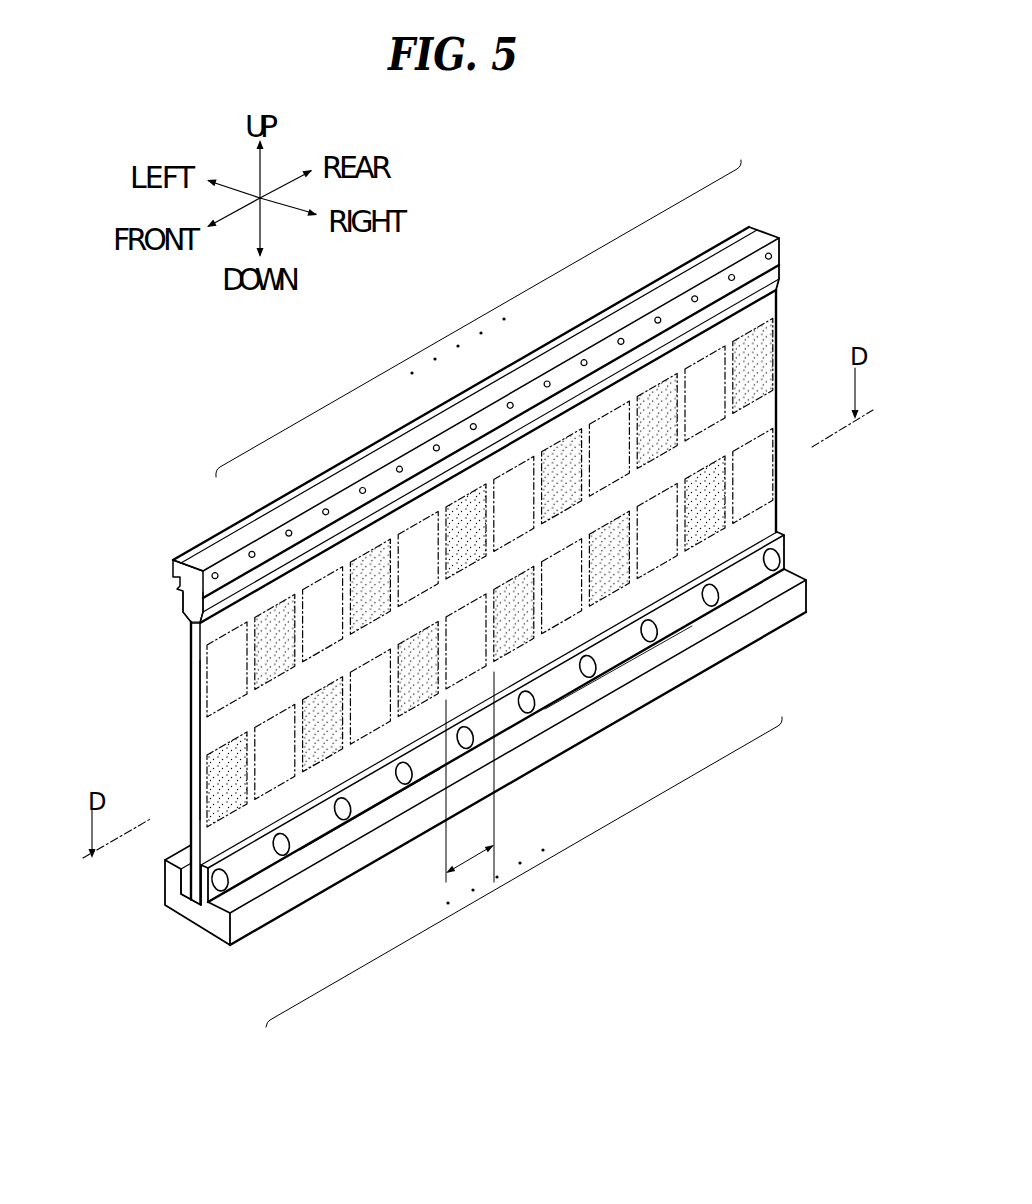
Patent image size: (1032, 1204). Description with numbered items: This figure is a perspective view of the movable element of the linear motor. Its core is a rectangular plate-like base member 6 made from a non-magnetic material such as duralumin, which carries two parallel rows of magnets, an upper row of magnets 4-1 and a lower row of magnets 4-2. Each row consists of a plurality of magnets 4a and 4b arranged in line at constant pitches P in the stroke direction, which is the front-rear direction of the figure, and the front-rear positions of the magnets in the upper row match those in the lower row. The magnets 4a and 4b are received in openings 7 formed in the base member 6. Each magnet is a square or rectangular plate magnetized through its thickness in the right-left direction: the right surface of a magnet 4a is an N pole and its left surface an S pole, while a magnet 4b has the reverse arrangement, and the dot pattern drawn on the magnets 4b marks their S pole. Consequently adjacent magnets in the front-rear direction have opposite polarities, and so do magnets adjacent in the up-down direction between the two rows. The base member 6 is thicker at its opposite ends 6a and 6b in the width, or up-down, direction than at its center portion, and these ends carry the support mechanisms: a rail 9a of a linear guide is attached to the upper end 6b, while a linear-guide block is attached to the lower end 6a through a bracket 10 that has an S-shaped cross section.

The magnet 4a is at (225, 650).
The magnet 4b is at (272, 627).
The upper row of magnets 4-1 is at (476, 319).
The lower row of magnets 4-2 is at (533, 868).
The base member 6 is at (196, 736).
The lower end of the base member 6a is at (195, 887).
The upper end of the base member 6b is at (184, 606).
The opening 7 is at (206, 695).
The rail 9a is at (178, 568).
The bracket 10 is at (203, 916).
The pitch P is at (470, 777).